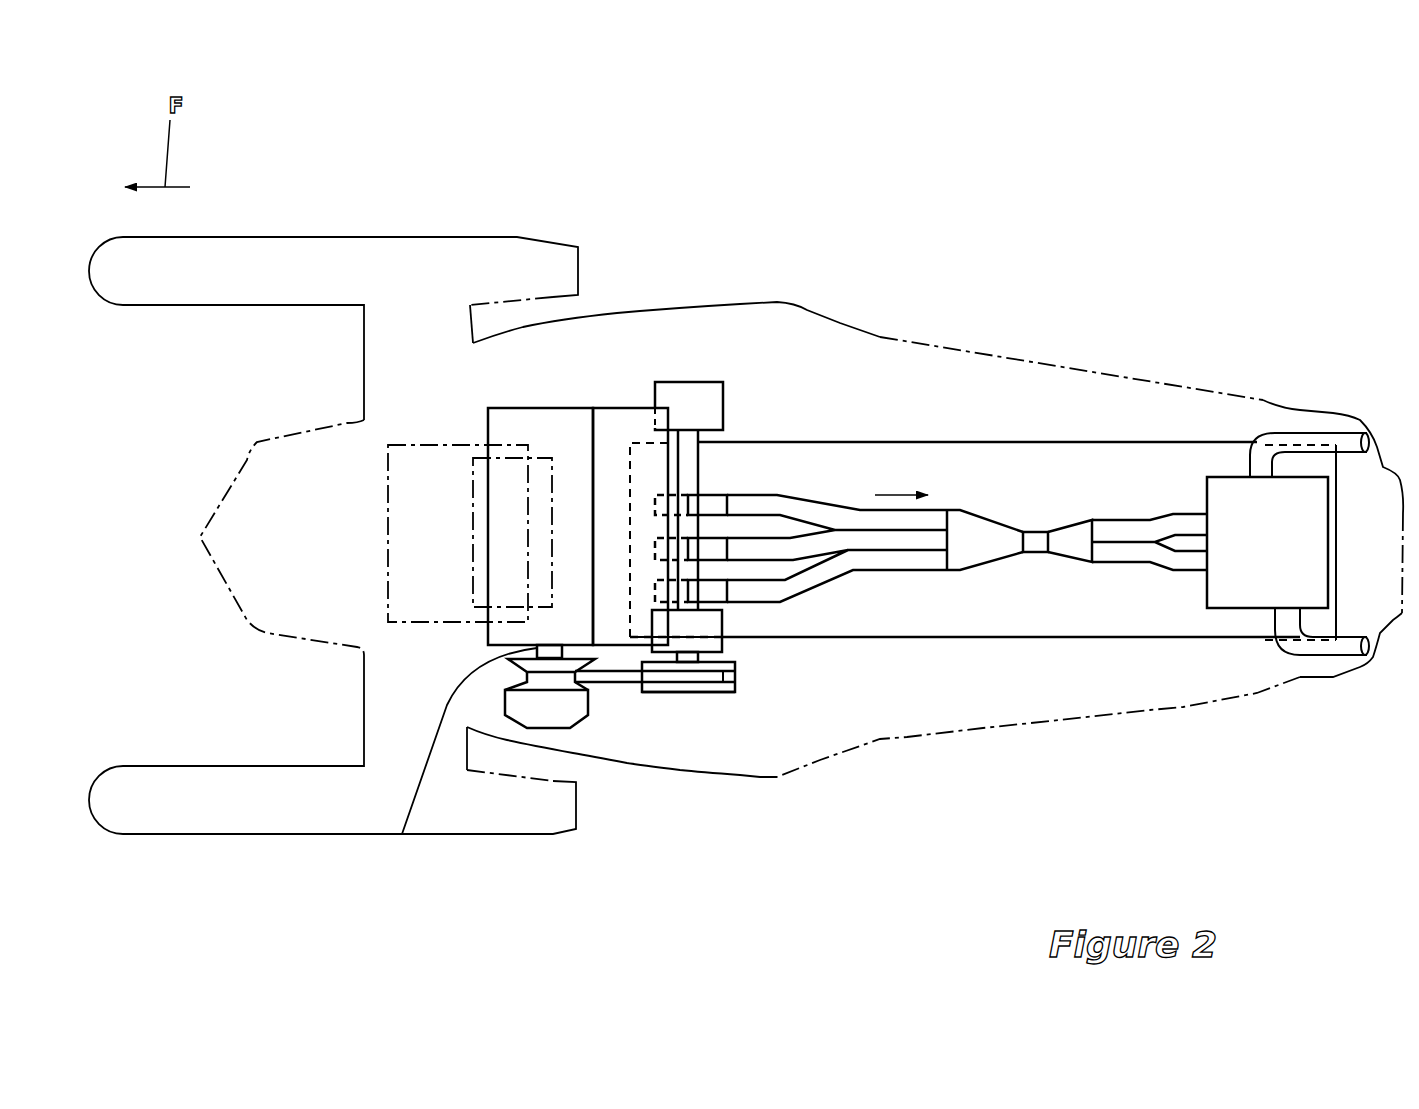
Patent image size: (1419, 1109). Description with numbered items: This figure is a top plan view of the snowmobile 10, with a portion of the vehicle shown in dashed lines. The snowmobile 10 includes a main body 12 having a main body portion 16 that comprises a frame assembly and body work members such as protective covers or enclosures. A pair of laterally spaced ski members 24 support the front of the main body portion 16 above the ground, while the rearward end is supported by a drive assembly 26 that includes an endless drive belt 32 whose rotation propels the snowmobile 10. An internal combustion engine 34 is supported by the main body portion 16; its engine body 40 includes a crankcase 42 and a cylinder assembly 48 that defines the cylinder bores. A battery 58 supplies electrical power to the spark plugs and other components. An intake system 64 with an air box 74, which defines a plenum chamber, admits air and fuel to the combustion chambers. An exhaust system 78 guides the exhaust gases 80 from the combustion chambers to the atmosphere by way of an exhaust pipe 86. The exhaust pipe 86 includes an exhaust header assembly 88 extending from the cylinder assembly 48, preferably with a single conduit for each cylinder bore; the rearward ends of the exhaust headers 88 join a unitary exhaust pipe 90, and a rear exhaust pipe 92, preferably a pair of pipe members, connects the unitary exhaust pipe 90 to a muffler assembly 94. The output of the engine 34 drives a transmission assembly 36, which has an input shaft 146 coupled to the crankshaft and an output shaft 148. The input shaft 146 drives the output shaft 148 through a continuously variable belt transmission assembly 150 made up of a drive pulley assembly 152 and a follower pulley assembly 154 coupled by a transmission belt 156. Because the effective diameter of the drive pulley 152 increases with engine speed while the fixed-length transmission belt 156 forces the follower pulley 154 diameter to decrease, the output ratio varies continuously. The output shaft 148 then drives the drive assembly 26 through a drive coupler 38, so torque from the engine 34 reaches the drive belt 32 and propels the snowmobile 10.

The snowmobile 10 is at (1270, 310).
The main body 12 is at (1178, 335).
The main body portion 16 is at (247, 460).
The ski members 24 is at (290, 237).
The drive assembly 26 is at (980, 442).
The endless drive belt 32 is at (1037, 470).
The internal combustion engine 34 is at (448, 516).
The transmission assembly 36 is at (597, 732).
The drive coupler 38 is at (730, 398).
The engine body 40 is at (627, 407).
The crankcase 42 is at (533, 408).
The cylinder assembly 48 is at (583, 408).
The battery 58 is at (470, 558).
The intake system 64 is at (398, 440).
The air box 74 is at (435, 443).
The exhaust system 78 is at (902, 588).
The exhaust gases 80 is at (890, 495).
The exhaust pipe 86 is at (970, 572).
The exhaust header assembly 88 is at (800, 587).
The unitary exhaust pipe 90 is at (1035, 553).
The rear exhaust pipe 92 is at (1147, 568).
The muffler assembly 94 is at (1245, 583).
The input shaft 146 is at (447, 705).
The output shaft 148 is at (703, 660).
The continuously variable belt transmission assembly 150 is at (612, 689).
The drive pulley assembly 152 is at (545, 703).
The follower pulley assembly 154 is at (685, 692).
The transmission belt 156 is at (630, 685).